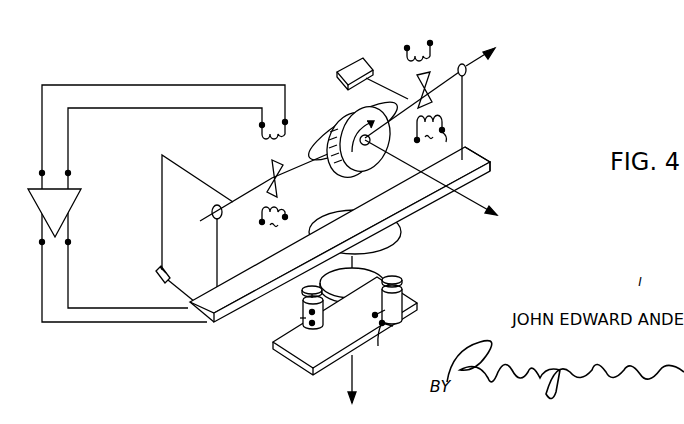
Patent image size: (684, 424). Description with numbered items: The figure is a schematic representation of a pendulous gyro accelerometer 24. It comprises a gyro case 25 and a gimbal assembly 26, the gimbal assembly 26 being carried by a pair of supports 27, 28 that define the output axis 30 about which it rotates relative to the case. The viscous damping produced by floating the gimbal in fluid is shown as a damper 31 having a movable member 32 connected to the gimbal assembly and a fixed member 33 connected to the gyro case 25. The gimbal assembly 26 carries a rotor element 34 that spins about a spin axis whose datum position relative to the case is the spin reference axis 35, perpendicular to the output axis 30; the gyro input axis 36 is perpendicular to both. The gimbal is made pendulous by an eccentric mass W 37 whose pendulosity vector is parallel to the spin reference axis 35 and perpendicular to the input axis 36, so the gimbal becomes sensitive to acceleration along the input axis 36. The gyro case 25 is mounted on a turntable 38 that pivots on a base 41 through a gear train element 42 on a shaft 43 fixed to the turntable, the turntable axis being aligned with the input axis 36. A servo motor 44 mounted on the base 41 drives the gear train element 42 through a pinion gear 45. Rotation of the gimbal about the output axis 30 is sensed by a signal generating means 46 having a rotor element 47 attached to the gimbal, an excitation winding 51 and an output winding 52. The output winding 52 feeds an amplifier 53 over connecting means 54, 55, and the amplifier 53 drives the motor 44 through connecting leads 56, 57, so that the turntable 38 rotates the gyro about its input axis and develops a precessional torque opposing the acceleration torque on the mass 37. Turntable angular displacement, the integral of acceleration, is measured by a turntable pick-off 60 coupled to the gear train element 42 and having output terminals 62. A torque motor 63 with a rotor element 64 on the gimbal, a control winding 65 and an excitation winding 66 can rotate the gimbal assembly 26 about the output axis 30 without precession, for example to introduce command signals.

The pendulous gyro accelerometer 24 is at (433, 262).
The gyro case 25 is at (491, 162).
The gimbal assembly 26 is at (328, 138).
The support 27 is at (217, 256).
The support 28 is at (463, 112).
The output axis 30 is at (470, 70).
The damper 31 is at (168, 274).
The movable member 32 is at (161, 249).
The fixed member 33 is at (157, 281).
The rotor element 34 is at (350, 111).
The spin reference axis 35 is at (472, 202).
The gyro input axis 36 is at (343, 374).
The mass W 37 is at (365, 58).
The turntable 38 is at (401, 231).
The base 41 is at (396, 324).
The gear train element 42 is at (379, 268).
The shaft 43 is at (352, 306).
The servo motor 44 is at (300, 318).
The pinion gear 45 is at (302, 292).
The signal generating means 46 is at (314, 195).
The rotor element 47 is at (283, 175).
The excitation winding 51 is at (259, 208).
The output winding 52 is at (258, 138).
The amplifier 53 is at (72, 205).
The connecting means 54 is at (123, 85).
The connecting means 55 is at (124, 108).
The connecting lead 56 is at (68, 288).
The connecting lead 57 is at (146, 324).
The turntable pick-off 60 is at (402, 300).
The output terminals 62 is at (378, 346).
The torque motor 63 is at (435, 67).
The rotor element 64 is at (418, 128).
The control winding 65 is at (410, 46).
The excitation winding 66 is at (446, 144).